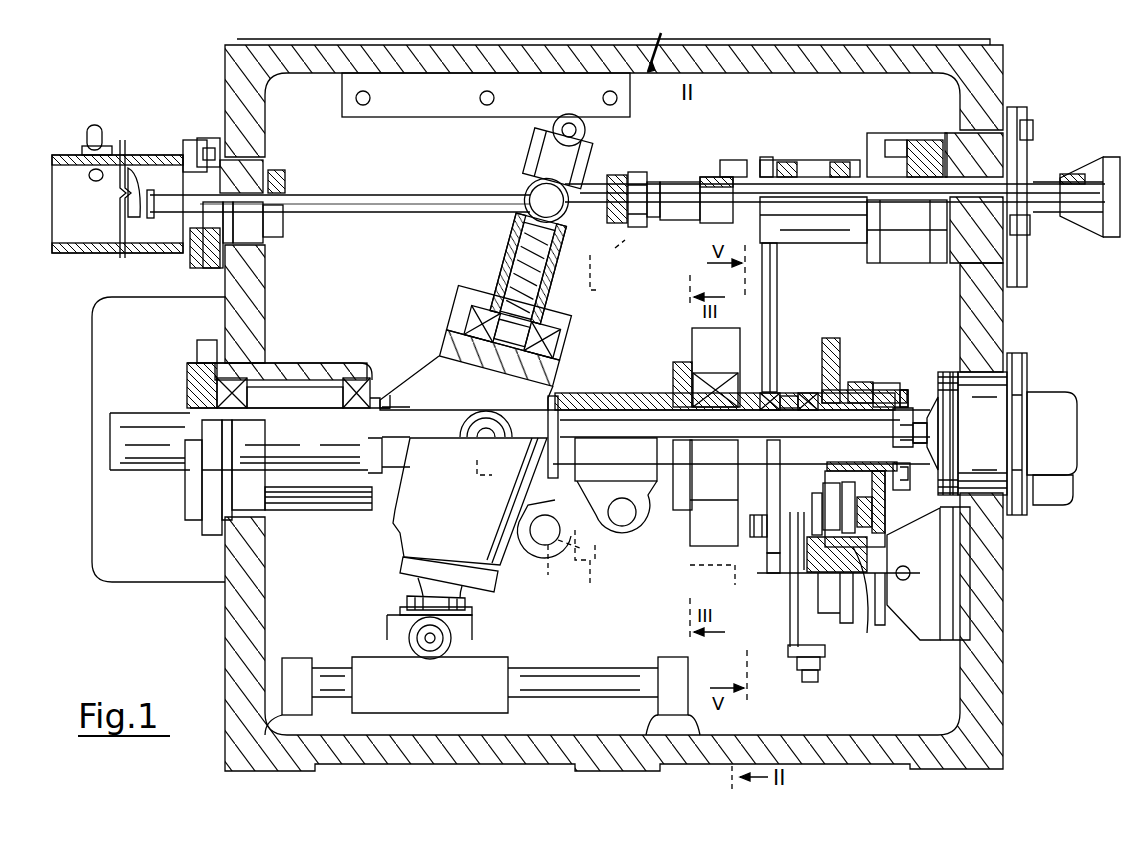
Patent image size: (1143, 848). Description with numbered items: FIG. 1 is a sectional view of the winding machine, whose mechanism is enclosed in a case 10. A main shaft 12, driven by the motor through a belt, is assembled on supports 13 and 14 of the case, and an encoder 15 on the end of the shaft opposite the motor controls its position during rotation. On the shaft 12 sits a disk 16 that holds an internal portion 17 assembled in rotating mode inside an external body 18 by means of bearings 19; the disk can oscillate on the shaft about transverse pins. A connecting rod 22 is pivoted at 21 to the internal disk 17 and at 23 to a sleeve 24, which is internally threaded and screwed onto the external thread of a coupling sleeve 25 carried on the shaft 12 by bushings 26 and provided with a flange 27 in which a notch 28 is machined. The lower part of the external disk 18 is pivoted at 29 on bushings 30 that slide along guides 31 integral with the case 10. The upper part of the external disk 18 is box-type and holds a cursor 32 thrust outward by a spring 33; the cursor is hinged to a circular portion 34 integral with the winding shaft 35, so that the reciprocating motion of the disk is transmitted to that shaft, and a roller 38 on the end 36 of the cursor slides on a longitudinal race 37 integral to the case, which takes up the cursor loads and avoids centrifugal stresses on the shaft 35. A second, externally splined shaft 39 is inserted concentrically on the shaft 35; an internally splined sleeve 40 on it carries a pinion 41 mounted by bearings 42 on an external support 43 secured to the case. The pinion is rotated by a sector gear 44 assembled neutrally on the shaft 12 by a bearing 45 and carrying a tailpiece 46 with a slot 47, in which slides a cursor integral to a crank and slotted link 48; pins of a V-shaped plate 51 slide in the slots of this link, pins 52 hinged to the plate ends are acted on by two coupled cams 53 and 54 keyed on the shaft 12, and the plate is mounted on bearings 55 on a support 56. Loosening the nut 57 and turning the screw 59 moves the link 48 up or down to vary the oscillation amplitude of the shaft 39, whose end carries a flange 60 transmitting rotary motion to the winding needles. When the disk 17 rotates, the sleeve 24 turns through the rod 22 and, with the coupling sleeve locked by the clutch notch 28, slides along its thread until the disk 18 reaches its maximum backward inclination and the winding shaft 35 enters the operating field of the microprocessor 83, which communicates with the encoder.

The case 10 is at (380, 752).
The main shaft 12 is at (135, 420).
The support 13 is at (303, 368).
The support 14 is at (703, 342).
The encoder 15 is at (1066, 406).
The disk 16 is at (390, 543).
The internal portion 17 is at (438, 376).
The external body 18 is at (480, 282).
The bearings 19 is at (462, 310).
The pivot 21 is at (547, 570).
The connecting rod 22 is at (586, 518).
The pivot 23 is at (624, 514).
The sleeve 24 is at (641, 470).
The coupling sleeve 25 is at (662, 398).
The bushings 26 is at (596, 396).
The flange 27 is at (686, 512).
The notch 28 is at (678, 362).
The pivot 29 is at (446, 640).
The bushings 30 is at (472, 700).
The guides 31 is at (617, 670).
The cursor 32 is at (528, 180).
The spring 33 is at (582, 268).
The circular portion 34 is at (590, 192).
The winding shaft 35 is at (380, 194).
The end of the cursor 36 is at (556, 152).
The longitudinal race 37 is at (464, 92).
The roller 38 is at (564, 118).
The second shaft 39 is at (672, 186).
The sleeve 40 is at (720, 160).
The pinion 41 is at (766, 162).
The bearings 42 is at (800, 164).
The external support 43 is at (893, 145).
The sector gear 44 is at (778, 266).
The bearing 45 is at (782, 396).
The tailpiece 46 is at (770, 560).
The slot 47 is at (765, 552).
The crank and slotted link 48 is at (752, 492).
The V-shaped plate 51 is at (860, 522).
The pins 52 is at (830, 503).
The cam 53 is at (838, 345).
The cam 54 is at (866, 384).
The bearings 55 is at (870, 612).
The support 56 is at (920, 588).
The nut 57 is at (822, 666).
The screw 59 is at (810, 684).
The flange 60 is at (1102, 228).
The microprocessor 83 is at (88, 135).